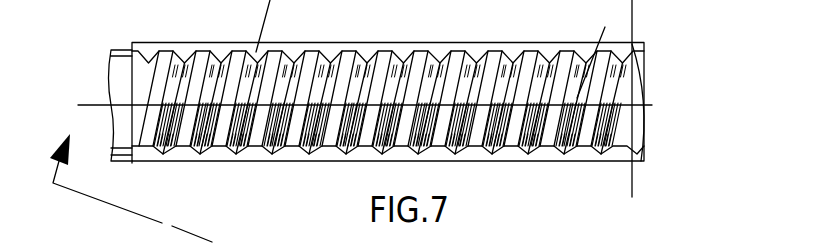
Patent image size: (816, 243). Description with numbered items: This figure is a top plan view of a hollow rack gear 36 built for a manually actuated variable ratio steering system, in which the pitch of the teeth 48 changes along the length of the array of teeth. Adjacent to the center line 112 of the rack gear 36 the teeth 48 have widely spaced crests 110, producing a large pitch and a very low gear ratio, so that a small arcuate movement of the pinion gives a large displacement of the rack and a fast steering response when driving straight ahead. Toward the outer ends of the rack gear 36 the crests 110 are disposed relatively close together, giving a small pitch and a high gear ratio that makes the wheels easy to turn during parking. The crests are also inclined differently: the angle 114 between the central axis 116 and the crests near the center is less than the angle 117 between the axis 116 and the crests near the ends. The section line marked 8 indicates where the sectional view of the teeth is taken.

The rack gear 36 is at (128, 23).
The teeth 48 is at (222, 65).
The crests 110 is at (222, 156).
The angle 117 is at (258, 130).
The angle 114 is at (634, 44).
The central axis 116 is at (657, 101).
The center line 112 is at (636, 184).
The section line 8- 8 is at (131, 172).